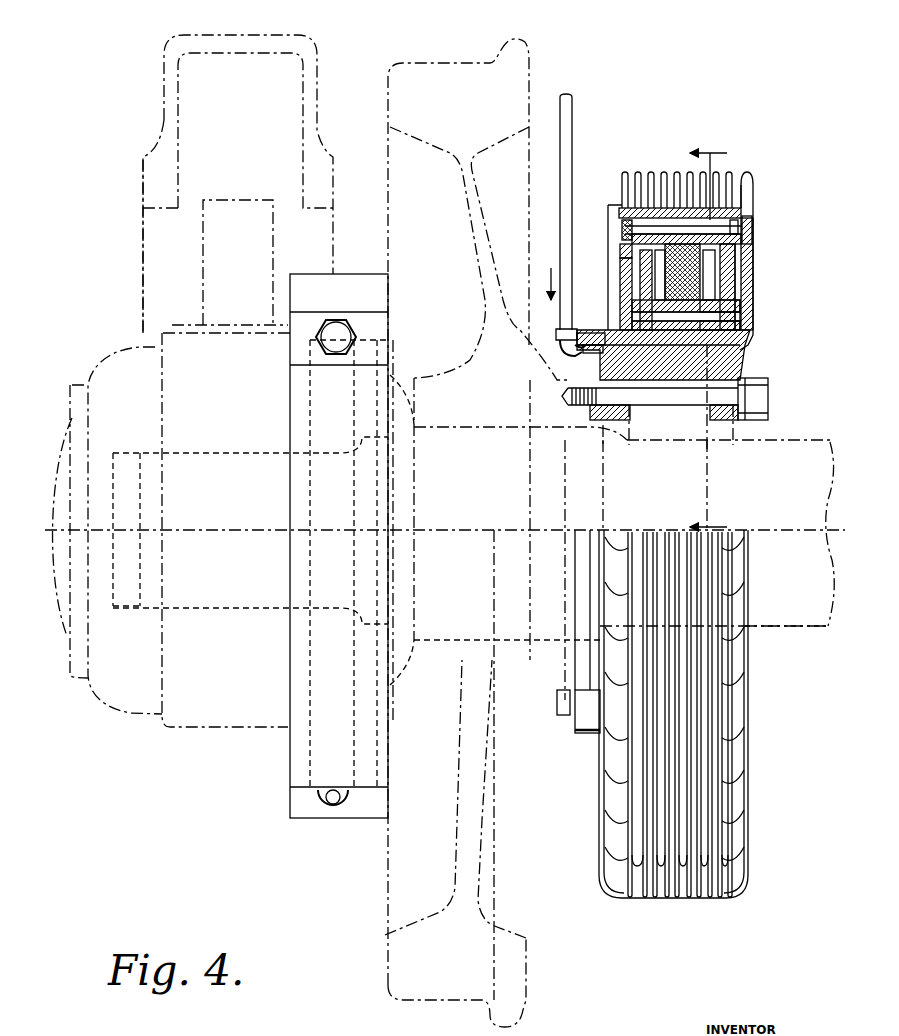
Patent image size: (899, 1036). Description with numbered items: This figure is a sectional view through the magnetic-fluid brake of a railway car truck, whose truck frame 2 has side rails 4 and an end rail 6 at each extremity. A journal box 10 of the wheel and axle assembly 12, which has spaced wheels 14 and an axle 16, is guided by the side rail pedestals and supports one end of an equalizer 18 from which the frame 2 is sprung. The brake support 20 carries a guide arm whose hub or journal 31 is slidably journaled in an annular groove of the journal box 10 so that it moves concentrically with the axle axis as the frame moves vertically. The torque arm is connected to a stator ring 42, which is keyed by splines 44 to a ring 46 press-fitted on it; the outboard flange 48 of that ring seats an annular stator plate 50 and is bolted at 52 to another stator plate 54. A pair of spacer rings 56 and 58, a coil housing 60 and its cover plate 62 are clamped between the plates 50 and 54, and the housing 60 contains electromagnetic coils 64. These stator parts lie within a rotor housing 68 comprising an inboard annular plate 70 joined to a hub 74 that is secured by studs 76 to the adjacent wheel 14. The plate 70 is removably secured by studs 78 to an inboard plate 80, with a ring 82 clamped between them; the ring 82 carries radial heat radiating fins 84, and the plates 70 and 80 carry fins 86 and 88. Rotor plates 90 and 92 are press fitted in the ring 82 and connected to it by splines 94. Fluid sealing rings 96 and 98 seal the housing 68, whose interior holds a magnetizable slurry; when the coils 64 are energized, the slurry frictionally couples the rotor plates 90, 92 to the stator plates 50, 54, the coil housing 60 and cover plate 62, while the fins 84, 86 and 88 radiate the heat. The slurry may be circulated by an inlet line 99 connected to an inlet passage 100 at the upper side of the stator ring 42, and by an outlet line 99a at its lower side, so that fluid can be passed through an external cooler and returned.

The truck frame 2 is at (163, 63).
The side rails 4 is at (158, 170).
The equalizer 18 is at (236, 220).
The journal box 10 is at (195, 718).
The brake support 20 is at (332, 718).
The hub or journal 31 is at (295, 808).
The wheels 14 is at (468, 75).
The wheel and axle assembly 12 is at (834, 430).
The axle 16 is at (808, 615).
The inlet line 99 is at (575, 120).
The outlet line 99a is at (565, 725).
The inlet passage 100 is at (572, 354).
The fluid sealing ring 96 is at (610, 331).
The outboard flange 48 is at (614, 318).
The heat radiating fins 88 is at (618, 205).
The heat radiating fins 84 is at (648, 174).
The ring 82 is at (668, 208).
The rotor housing 68 is at (744, 173).
The heat radiating fins 86 is at (750, 196).
The inboard plate 80 is at (620, 210).
The inboard annular plate 70 is at (740, 352).
The studs 78 is at (746, 222).
The splines 94 is at (622, 226).
The stator plate 54 is at (745, 229).
The rotor plate 90 is at (630, 243).
The coil housing 60 is at (628, 257).
The stator plate 50 is at (640, 270).
The spacer ring 56 is at (656, 290).
The cover plate 62 is at (700, 272).
The electromagnetic coils 64 is at (716, 252).
The rotor plate 92 is at (736, 266).
The spacer ring 58 is at (750, 292).
The bolt 52 is at (742, 306).
The ring 46 is at (740, 326).
The splines 44 is at (735, 333).
The fluid sealing ring 98 is at (737, 343).
The stator ring 42 is at (735, 368).
The hub 74 is at (672, 402).
The studs 76 is at (748, 416).
The end rail 6 is at (708, 333).